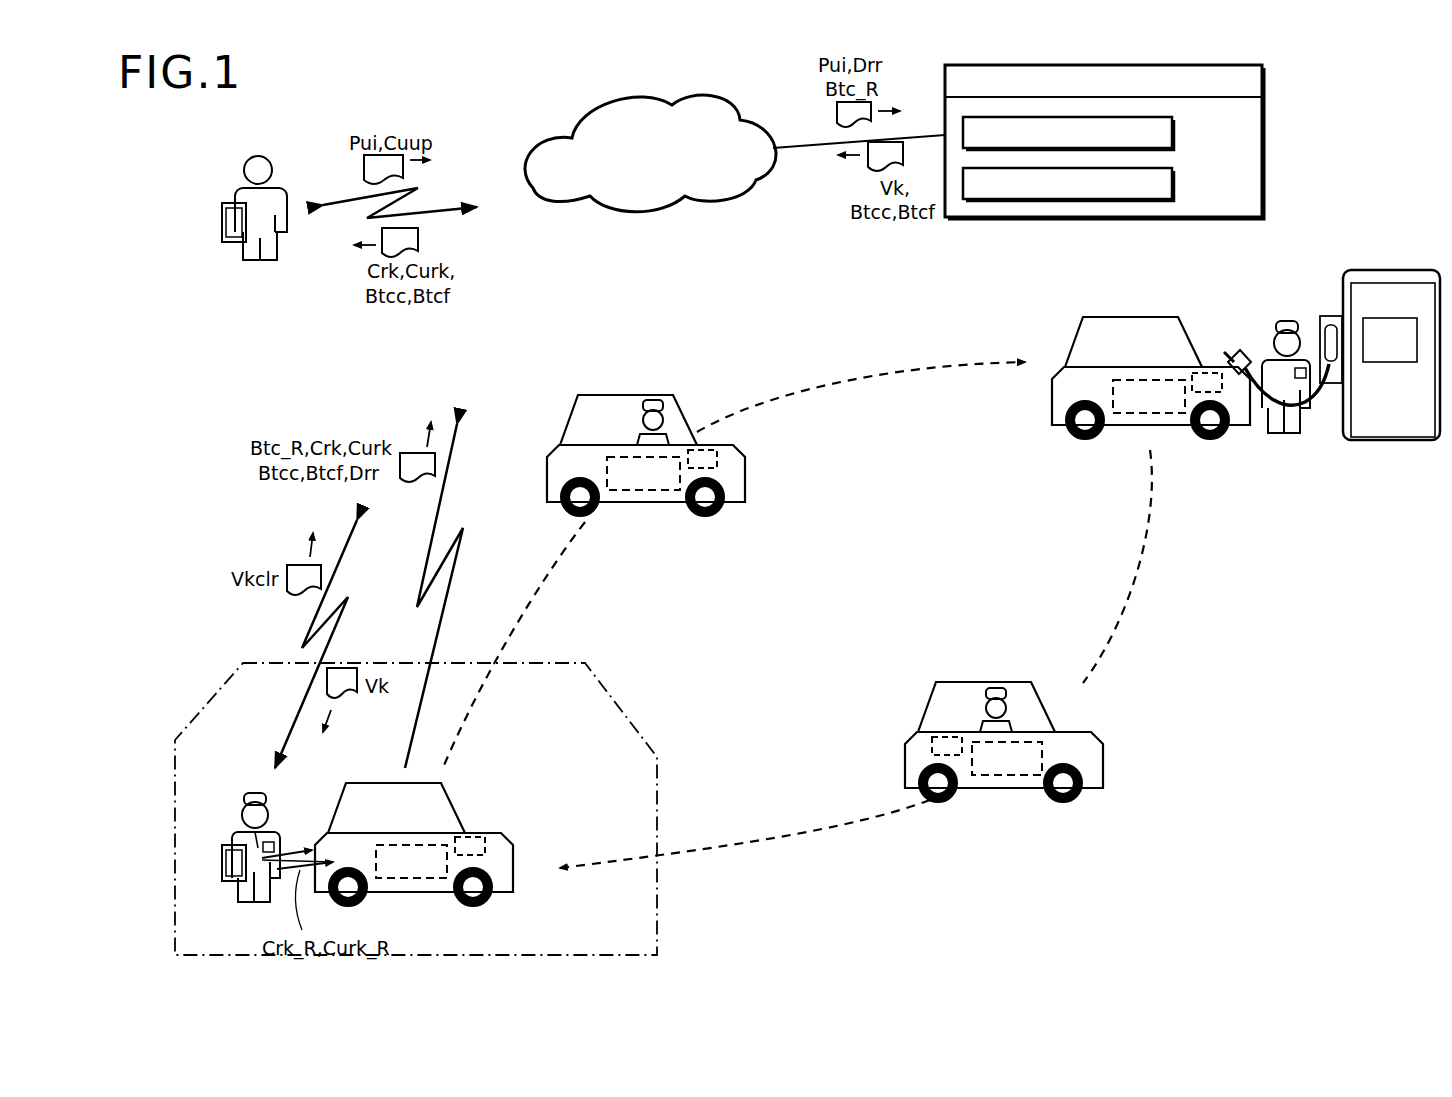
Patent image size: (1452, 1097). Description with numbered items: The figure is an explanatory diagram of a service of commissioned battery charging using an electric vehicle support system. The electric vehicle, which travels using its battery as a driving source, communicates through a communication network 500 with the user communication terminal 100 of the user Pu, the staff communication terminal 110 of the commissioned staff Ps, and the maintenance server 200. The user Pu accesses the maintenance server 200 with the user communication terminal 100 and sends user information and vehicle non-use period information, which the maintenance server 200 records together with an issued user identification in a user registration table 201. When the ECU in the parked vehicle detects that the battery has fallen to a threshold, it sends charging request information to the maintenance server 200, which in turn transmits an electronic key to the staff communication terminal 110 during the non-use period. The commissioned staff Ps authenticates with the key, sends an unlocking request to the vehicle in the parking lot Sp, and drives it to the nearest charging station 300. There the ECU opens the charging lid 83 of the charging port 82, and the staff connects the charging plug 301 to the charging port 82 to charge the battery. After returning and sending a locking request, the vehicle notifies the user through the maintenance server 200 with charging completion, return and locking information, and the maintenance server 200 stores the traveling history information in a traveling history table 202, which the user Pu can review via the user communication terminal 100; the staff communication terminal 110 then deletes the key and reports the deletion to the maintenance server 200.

The charging port 82 is at (1238, 378).
The charging lid 83 is at (1229, 356).
The user communication terminal 100 is at (222, 226).
The staff communication terminal 110 is at (222, 866).
The maintenance server 200 is at (1141, 142).
The user registration table 201 is at (1174, 132).
The traveling history table 202 is at (1174, 183).
The charging station 300 is at (1340, 323).
The charging plug 301 is at (1241, 350).
The communication network 500 is at (613, 98).